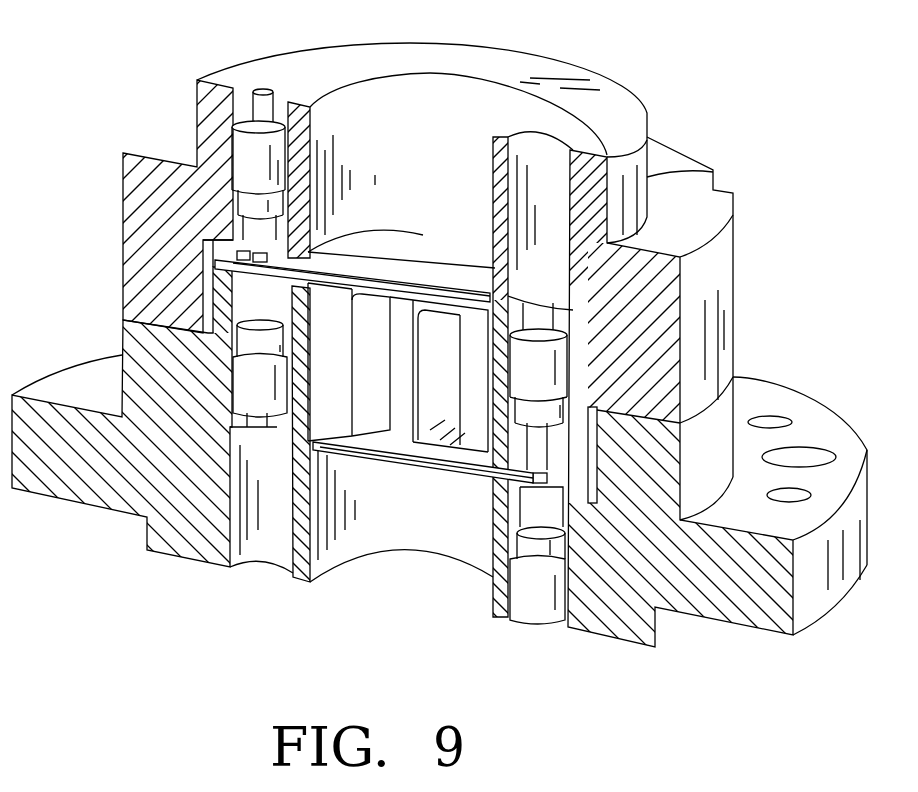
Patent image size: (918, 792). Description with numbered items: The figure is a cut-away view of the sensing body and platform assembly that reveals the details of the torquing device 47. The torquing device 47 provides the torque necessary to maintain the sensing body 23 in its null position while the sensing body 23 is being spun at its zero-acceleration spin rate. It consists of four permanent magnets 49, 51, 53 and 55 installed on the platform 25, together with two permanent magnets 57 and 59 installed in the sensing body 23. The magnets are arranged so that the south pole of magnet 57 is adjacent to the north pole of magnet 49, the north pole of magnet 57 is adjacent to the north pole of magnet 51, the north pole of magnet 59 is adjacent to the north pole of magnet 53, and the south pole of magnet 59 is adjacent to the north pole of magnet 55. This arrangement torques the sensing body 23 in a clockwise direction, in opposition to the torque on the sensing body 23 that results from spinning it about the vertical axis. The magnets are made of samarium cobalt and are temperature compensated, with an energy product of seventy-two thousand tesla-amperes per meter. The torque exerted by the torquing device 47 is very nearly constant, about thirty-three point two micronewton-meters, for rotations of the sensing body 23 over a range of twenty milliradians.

The sensing body 23 is at (400, 452).
The platform 25 is at (72, 387).
The torquing device 47 is at (459, 396).
The permanent magnet 49 is at (247, 203).
The permanent magnet 51 is at (275, 343).
The permanent magnet 53 is at (537, 393).
The permanent magnet 55 is at (533, 557).
The permanent magnet 57 is at (227, 290).
The permanent magnet 59 is at (533, 452).